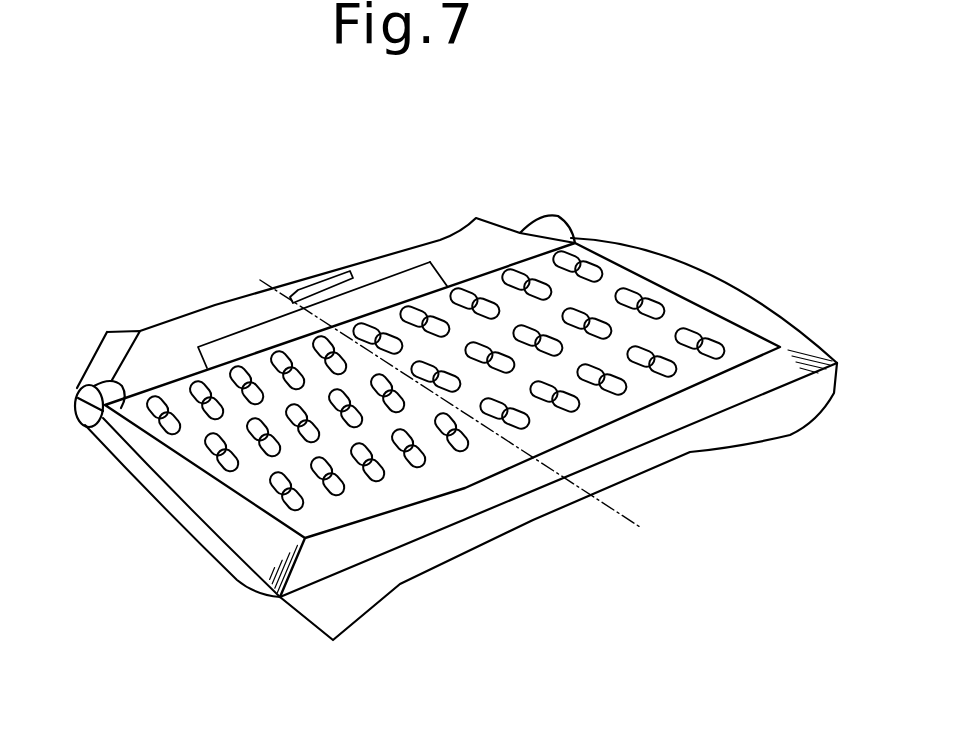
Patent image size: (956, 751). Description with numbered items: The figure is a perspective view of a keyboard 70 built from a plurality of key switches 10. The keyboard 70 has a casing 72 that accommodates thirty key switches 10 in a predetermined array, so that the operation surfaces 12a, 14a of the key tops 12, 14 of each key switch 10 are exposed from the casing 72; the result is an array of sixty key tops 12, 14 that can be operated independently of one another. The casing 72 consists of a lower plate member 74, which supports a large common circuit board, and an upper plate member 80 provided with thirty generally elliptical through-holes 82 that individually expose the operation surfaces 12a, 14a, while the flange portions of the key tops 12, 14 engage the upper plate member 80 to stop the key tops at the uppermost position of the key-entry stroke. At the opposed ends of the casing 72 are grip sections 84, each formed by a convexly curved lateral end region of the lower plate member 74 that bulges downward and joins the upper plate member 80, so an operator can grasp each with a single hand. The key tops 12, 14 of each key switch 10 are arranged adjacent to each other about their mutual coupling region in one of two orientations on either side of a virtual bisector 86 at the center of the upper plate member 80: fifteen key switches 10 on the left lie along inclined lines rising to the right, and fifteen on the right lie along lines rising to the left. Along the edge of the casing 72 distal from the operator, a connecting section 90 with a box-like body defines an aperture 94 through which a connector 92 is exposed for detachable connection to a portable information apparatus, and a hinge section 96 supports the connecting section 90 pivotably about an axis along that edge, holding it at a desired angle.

The key switch 10 is at (408, 407).
The key top 12 is at (226, 465).
The operation surface 12a is at (670, 374).
The key top 14 is at (213, 438).
The operation surface 14a is at (638, 380).
The keyboard 70 is at (466, 368).
The casing 72 is at (497, 543).
The lower plate member 74 is at (420, 557).
The upper plate member 80 is at (740, 302).
The through-hole 82 is at (378, 490).
The grip section 84 is at (237, 580).
The virtual bisector 86 is at (617, 510).
The connecting section 90 is at (182, 313).
The connector 92 is at (333, 280).
The aperture 94 is at (370, 273).
The hinge section 96 is at (413, 280).